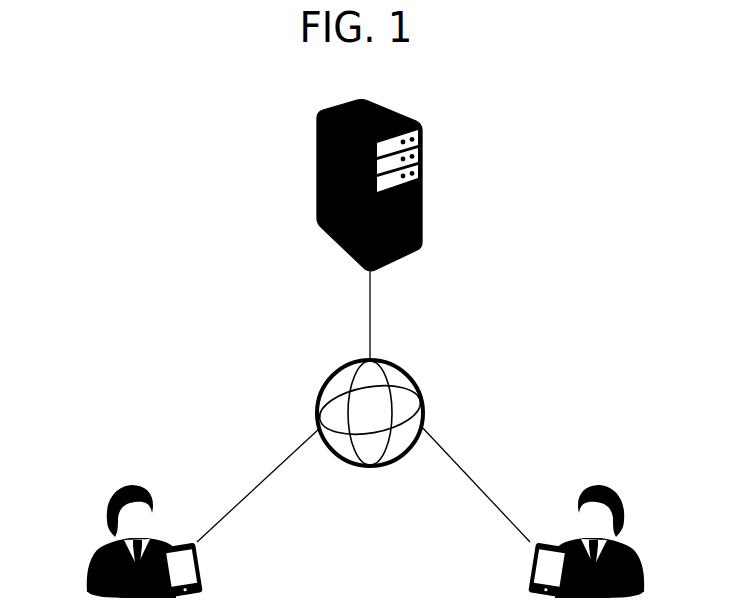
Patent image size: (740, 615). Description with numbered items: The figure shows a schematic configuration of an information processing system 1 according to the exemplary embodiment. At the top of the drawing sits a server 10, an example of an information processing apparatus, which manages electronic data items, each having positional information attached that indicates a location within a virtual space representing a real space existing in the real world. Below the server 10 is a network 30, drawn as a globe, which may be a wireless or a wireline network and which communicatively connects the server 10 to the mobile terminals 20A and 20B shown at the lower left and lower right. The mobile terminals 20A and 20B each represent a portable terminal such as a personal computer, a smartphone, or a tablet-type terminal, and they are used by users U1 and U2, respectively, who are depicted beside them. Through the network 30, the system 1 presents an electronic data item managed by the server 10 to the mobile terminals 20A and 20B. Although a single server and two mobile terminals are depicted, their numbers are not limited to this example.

The information processing system 1 is at (598, 101).
The server 10 is at (418, 150).
The network 30 is at (418, 383).
The mobile terminal 20A is at (200, 558).
The mobile terminal 20B is at (528, 560).
The user U1 is at (105, 512).
The user U2 is at (625, 513).